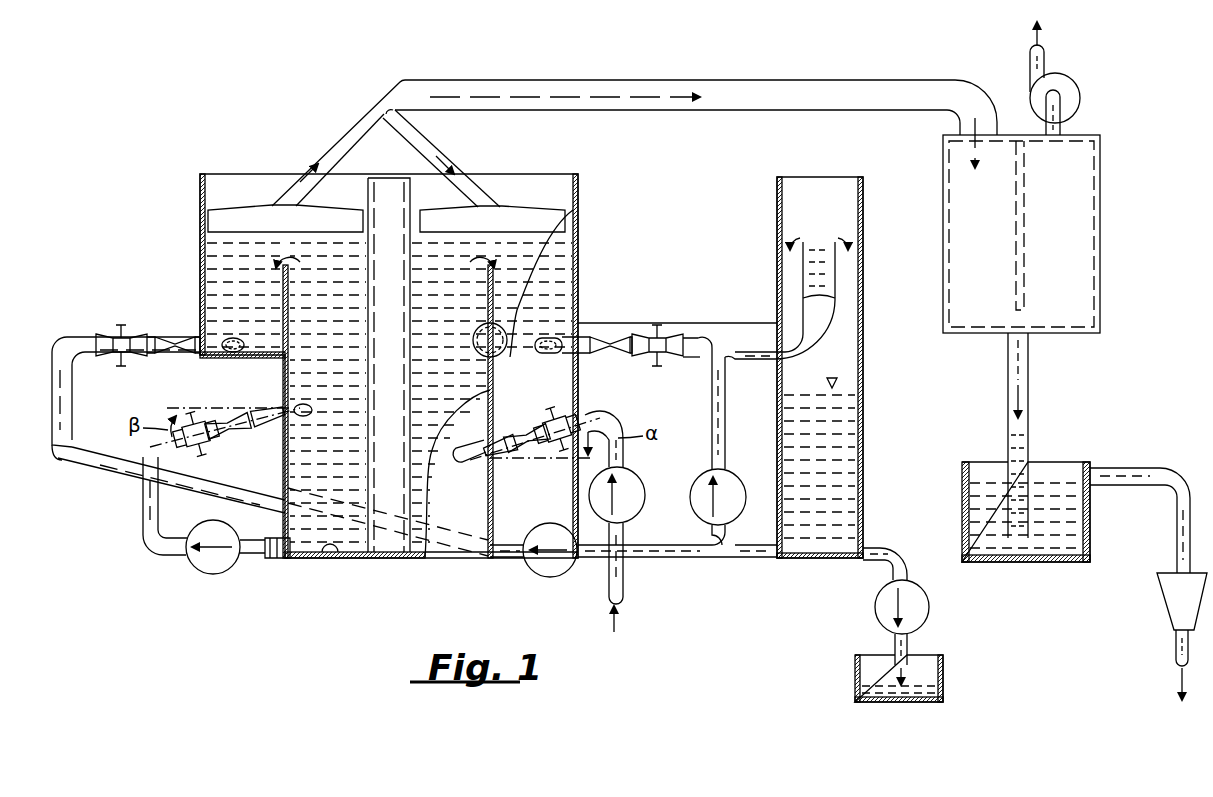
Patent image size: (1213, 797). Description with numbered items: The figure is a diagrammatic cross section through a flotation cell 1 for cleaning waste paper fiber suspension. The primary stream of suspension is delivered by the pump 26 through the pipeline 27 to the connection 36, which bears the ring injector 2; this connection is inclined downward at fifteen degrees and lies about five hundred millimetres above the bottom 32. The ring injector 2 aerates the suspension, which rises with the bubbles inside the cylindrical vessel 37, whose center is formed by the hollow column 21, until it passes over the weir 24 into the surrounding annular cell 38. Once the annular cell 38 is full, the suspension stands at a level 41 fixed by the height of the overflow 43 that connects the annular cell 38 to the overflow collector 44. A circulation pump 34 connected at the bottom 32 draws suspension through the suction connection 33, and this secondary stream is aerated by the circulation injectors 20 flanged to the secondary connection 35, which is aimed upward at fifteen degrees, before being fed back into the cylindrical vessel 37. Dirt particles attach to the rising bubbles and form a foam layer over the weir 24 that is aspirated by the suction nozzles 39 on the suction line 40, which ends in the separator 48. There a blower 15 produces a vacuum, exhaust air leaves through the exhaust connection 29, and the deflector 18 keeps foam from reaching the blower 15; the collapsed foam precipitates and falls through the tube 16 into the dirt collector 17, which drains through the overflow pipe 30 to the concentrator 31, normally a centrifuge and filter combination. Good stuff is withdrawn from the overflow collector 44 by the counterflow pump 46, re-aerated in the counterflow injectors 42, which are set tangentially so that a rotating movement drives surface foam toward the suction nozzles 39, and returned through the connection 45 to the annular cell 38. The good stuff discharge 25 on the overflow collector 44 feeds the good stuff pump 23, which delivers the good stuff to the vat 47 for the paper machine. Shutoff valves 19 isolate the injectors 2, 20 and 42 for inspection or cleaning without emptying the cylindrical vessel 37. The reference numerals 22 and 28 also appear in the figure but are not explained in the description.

The flotation cell 1 is at (233, 172).
The ring injector 2 is at (548, 430).
The blower 15 is at (1078, 82).
The tube 16 is at (1028, 390).
The dirt collector 17 is at (1052, 546).
The deflector 18 is at (1020, 254).
The shutoff valves 19 is at (170, 334).
The circulation injectors 20 is at (190, 422).
The hollow column 21 is at (390, 186).
The pipe 22 is at (722, 560).
The good stuff pump 23 is at (875, 607).
The weir 24 is at (290, 292).
The good stuff discharge 25 is at (882, 546).
The pump 26 is at (592, 494).
The pipeline 27 is at (610, 418).
The overflow direction 28 is at (300, 262).
The exhaust connection 29 is at (1030, 65).
The overflow pipe 30 is at (1118, 466).
The concentrator 31 is at (1172, 612).
The bottom 32 is at (330, 562).
The suction connection 33 is at (289, 562).
The circulation pump 34 is at (220, 566).
The secondary connection 35 is at (280, 415).
The connection 36 is at (460, 468).
The cylindrical vessel 37 is at (283, 458).
The annular cell 38 is at (200, 257).
The suction nozzles 39 is at (262, 213).
The suction line 40 is at (520, 90).
The level 41 is at (530, 238).
The counterflow injectors 42 is at (110, 332).
The overflow 43 is at (818, 240).
The overflow collector 44 is at (862, 286).
The connection 45 is at (225, 340).
The counterflow pump 46 is at (553, 578).
The vat 47 is at (873, 676).
The separator 48 is at (1075, 214).